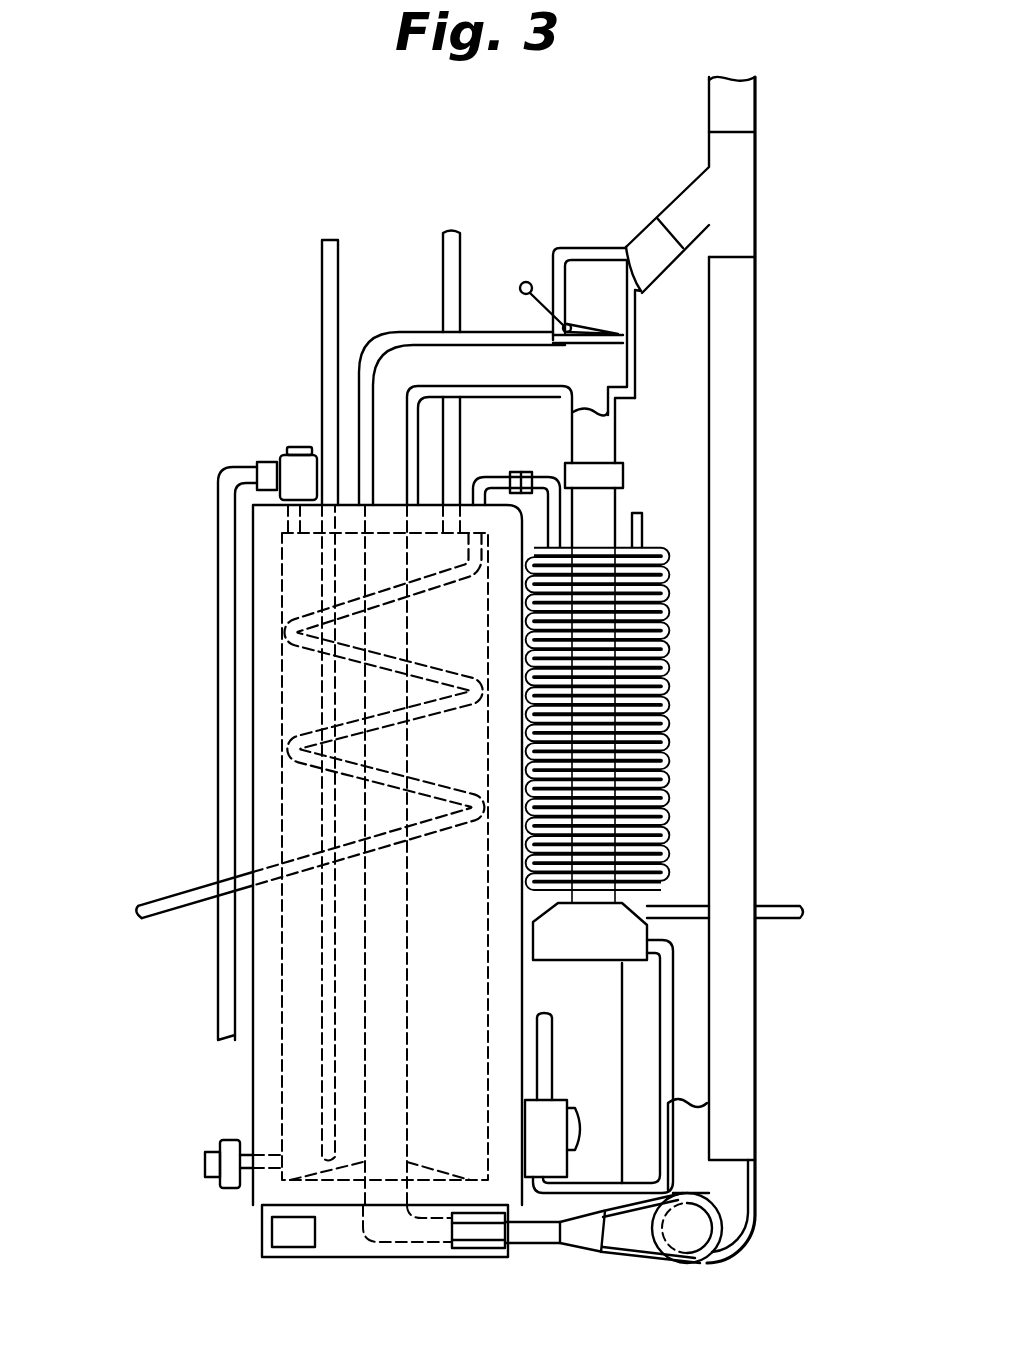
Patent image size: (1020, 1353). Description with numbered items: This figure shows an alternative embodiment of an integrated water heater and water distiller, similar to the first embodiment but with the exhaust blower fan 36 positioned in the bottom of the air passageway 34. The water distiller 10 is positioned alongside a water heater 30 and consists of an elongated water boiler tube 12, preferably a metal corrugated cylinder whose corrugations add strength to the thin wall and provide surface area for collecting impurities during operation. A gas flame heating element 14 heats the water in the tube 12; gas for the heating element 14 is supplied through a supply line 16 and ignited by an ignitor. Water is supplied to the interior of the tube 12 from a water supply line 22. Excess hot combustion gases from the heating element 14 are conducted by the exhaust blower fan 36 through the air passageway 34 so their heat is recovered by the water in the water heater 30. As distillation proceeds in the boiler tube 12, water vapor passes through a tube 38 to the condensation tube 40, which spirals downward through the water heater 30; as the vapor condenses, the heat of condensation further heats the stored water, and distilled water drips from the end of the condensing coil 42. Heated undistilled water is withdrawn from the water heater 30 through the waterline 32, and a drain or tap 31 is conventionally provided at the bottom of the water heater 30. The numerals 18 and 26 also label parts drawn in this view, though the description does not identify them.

The water distiller 10 is at (680, 659).
The water boiler tube 12 is at (663, 752).
The gas flame heating element 14 is at (657, 960).
The supply line 16 is at (667, 1100).
The header 18 is at (622, 932).
The water supply line 22 is at (787, 920).
The central pipe 26 is at (633, 610).
The water heater 30 is at (152, 743).
The drain or tap 31 is at (227, 1190).
The waterline 32 is at (443, 258).
The air passageway 34 is at (737, 358).
The exhaust blower fan 36 is at (687, 1235).
The tube 38 is at (560, 480).
The condensation tube 40 is at (284, 633).
The condensing coil 42 is at (139, 913).